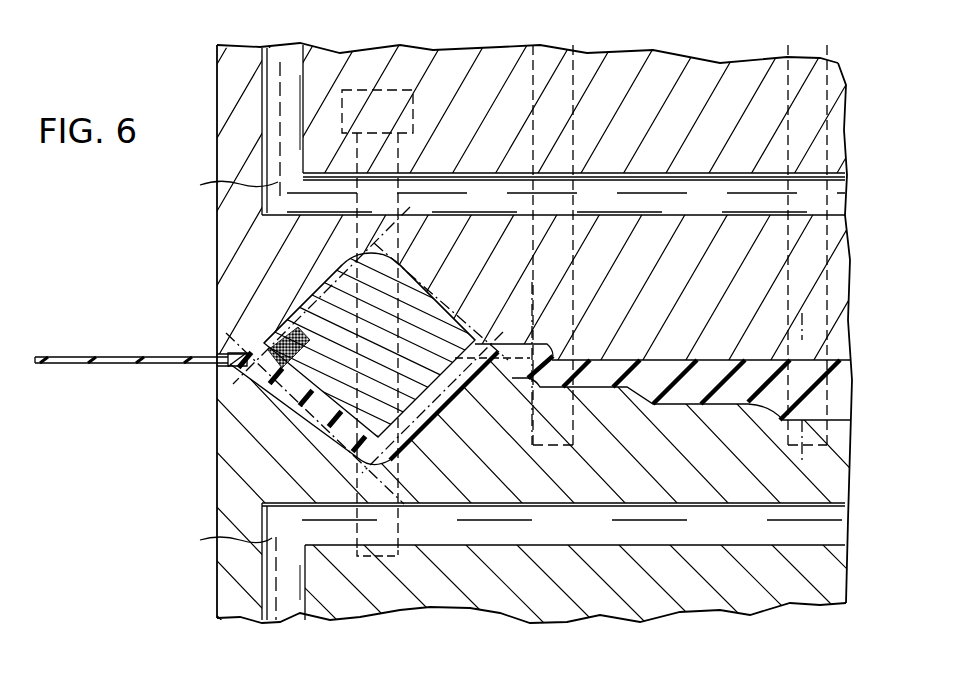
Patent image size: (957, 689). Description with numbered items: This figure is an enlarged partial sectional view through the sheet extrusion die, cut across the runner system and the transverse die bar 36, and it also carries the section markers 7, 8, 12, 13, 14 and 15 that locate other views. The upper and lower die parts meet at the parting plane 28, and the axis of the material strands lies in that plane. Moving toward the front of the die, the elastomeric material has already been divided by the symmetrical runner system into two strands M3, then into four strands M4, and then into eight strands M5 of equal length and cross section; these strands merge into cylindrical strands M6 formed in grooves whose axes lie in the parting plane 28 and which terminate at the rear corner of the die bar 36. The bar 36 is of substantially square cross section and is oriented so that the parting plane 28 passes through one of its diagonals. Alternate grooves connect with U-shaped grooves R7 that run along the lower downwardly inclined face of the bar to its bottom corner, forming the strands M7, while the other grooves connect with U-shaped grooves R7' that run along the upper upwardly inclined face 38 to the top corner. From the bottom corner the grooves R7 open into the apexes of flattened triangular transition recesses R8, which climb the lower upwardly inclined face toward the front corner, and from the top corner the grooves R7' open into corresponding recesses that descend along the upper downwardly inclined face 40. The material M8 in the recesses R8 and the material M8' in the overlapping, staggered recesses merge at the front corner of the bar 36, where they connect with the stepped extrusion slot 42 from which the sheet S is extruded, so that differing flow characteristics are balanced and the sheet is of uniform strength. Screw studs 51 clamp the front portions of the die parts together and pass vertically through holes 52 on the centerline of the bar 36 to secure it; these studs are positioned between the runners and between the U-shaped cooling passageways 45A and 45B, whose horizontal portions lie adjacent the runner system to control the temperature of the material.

The cooling passageway 45A is at (262, 186).
The cooling passageway 45B is at (262, 541).
The screw studs 51 is at (380, 93).
The sheet S is at (98, 356).
The stepped extrusion slot 42 is at (228, 353).
The transverse die bar 36 is at (445, 292).
The upper upwardly inclined face 38 is at (461, 324).
The upper downwardly inclined face 40 is at (317, 290).
The holes 52 is at (408, 382).
The U-shaped grooves R7' is at (397, 273).
The material M8' is at (282, 326).
The triangular grooves or transition recesses R8 is at (314, 434).
The material M8 is at (302, 401).
The strands M7 is at (458, 394).
The U-shaped grooves R7 is at (444, 412).
The parting plane 28 is at (668, 358).
The cylindrical strands M6 is at (545, 350).
The strands M5 is at (598, 383).
The strands M4 is at (687, 390).
The strands M3 is at (842, 384).
The section line 15- 15 is at (412, 208).
The section line 14- 14 is at (243, 319).
The section line 12- 12 is at (515, 322).
The section line 13- 13 is at (383, 256).
The section line 7- 7 is at (522, 312).
The section line 8- 8 is at (822, 313).